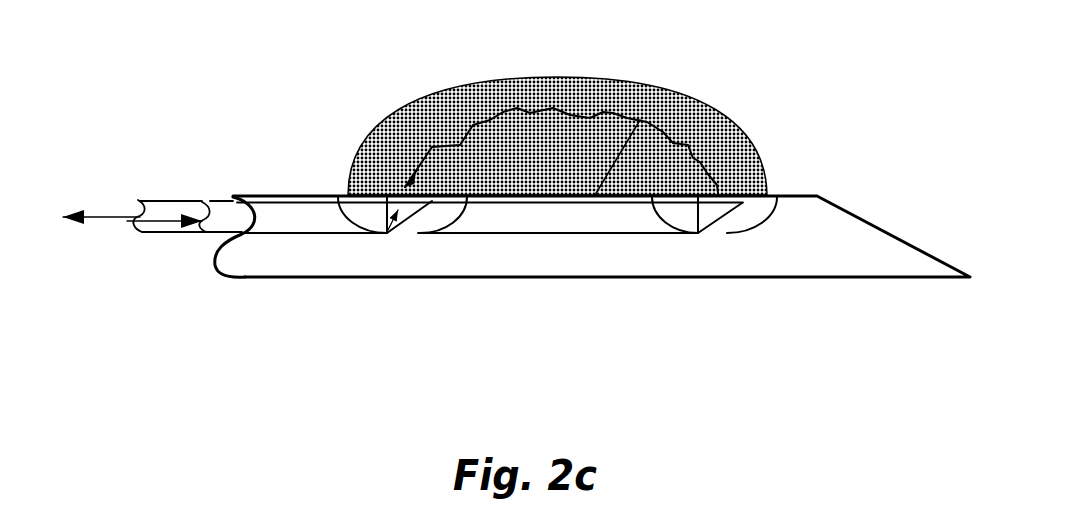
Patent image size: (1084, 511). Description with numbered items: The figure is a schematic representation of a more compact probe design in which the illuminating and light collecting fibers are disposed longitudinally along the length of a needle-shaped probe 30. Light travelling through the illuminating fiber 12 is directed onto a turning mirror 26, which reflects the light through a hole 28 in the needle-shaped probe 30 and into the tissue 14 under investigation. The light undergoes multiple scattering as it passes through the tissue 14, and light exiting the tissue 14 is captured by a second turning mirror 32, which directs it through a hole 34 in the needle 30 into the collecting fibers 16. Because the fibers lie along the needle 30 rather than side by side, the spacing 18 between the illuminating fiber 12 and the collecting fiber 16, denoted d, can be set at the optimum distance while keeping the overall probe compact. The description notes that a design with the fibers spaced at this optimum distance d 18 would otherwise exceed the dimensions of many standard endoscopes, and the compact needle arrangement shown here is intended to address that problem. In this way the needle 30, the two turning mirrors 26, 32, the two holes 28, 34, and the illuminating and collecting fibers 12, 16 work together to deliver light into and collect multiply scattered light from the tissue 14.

The illuminating fiber 12 is at (533, 215).
The tissue 14 is at (496, 136).
The collecting fiber 16 is at (307, 213).
The spacing between the illuminating and collecting fibers 18 is at (663, 98).
The turning mirror 26 is at (716, 219).
The hole 28 is at (750, 215).
The needle-shaped probe 30 is at (607, 279).
The turning mirror 32 is at (388, 233).
The hole 34 is at (427, 219).